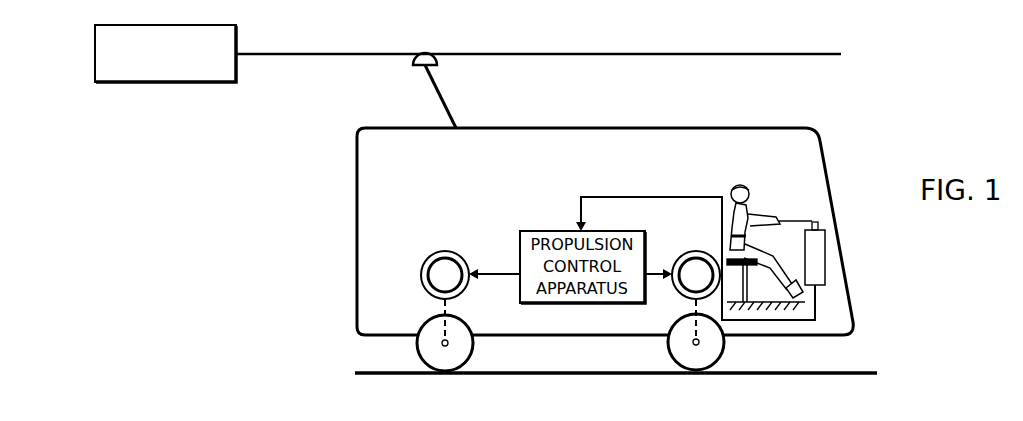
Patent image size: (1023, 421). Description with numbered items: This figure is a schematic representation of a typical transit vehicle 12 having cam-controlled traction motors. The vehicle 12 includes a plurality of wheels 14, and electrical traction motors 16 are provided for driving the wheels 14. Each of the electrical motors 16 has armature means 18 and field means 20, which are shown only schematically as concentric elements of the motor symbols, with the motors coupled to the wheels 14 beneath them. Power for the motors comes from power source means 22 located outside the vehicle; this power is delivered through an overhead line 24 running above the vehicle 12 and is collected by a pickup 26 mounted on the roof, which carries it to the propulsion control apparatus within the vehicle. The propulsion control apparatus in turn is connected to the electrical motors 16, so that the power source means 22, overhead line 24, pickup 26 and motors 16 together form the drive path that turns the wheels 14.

The transit vehicle 12 is at (357, 128).
The wheels 14 is at (473, 352).
The electrical traction motors 16 is at (428, 258).
The armature means 18 is at (451, 251).
The field means 20 is at (424, 283).
The power source means 22 is at (95, 45).
The overhead line 24 is at (333, 55).
The pickup 26 is at (449, 101).